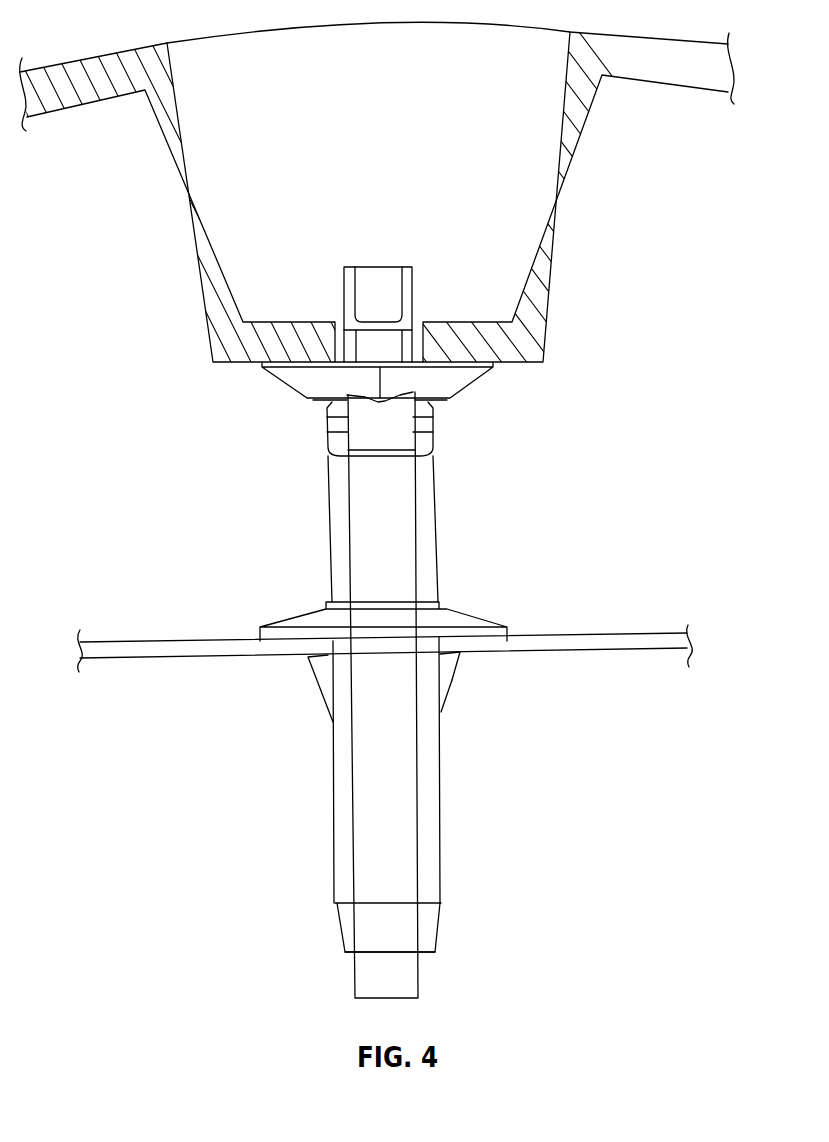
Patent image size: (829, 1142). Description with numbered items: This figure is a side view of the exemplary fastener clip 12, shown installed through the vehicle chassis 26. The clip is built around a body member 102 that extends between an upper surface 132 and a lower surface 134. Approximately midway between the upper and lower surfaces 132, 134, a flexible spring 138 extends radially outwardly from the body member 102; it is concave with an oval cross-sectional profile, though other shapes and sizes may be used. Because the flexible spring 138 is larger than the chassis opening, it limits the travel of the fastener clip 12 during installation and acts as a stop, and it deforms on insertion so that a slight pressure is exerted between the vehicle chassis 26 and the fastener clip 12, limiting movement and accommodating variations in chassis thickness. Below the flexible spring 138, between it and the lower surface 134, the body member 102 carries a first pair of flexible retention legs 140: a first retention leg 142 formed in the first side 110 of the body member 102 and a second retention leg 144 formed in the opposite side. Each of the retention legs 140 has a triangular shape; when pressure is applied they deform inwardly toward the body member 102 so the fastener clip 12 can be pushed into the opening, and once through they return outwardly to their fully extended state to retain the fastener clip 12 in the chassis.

The fastener clip 12 is at (640, 350).
The vehicle chassis 26 is at (655, 640).
The body member 102 is at (442, 792).
The first side 110 is at (430, 883).
The upper surface 132 is at (423, 408).
The lower surface 134 is at (427, 955).
The flexible spring 138 is at (450, 620).
The first pair of flexible retention legs 140 is at (453, 677).
The first retention leg 142 is at (445, 707).
The second retention leg 144 is at (308, 682).